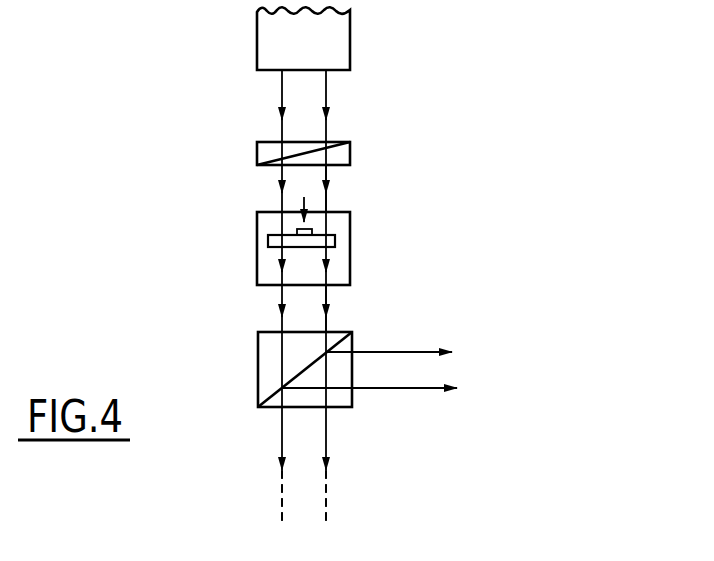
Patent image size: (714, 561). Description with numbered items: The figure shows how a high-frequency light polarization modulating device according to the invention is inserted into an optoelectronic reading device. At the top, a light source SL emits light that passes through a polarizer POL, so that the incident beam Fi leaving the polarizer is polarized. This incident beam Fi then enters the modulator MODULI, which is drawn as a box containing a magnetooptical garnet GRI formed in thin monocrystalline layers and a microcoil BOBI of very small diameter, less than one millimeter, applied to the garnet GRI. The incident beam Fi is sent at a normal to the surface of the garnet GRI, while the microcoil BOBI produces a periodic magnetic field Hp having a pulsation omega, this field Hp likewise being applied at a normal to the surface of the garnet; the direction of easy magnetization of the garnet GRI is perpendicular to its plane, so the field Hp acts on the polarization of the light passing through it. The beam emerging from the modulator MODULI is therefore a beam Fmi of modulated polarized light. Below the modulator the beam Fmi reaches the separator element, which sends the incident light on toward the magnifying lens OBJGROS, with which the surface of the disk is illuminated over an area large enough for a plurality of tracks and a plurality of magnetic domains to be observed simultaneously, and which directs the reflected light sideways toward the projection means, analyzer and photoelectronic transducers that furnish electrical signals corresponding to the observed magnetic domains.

The light source SL is at (303, 38).
The polarizer POL is at (351, 153).
The incident beam Fi is at (328, 176).
The periodic magnetic field Hp is at (307, 198).
The light polarization modulator MODULI is at (352, 262).
The magnetooptical garnet GRI is at (275, 244).
The microcoil BOBI is at (309, 232).
The modulated polarized light beam Fmi is at (328, 298).
The magnifying lens OBJGROS is at (347, 457).